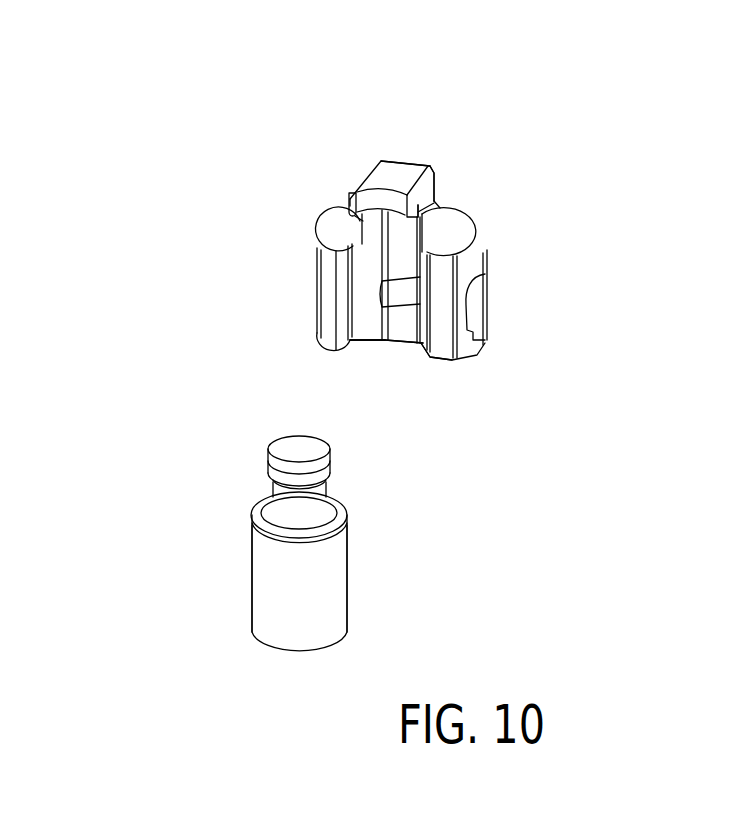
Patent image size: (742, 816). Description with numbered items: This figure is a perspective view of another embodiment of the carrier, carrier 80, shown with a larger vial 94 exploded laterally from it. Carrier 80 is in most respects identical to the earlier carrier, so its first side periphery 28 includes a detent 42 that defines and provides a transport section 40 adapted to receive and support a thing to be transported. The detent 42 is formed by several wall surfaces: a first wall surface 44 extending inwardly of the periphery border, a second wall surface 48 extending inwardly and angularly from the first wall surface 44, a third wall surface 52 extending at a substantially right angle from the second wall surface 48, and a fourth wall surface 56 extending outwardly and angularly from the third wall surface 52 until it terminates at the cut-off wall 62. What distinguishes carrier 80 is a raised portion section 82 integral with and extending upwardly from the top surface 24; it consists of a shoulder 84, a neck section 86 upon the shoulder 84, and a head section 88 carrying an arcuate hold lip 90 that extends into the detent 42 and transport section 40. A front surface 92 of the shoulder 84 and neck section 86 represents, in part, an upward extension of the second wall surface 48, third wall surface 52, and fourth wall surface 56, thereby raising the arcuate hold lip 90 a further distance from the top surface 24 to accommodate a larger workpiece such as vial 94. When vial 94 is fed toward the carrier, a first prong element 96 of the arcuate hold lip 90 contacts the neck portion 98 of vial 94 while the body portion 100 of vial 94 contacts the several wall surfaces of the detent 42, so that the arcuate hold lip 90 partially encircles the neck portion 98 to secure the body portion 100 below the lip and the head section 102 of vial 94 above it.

The carrier 80 is at (547, 229).
The head section 88 is at (397, 175).
The arcuate hold lip 90 is at (377, 200).
The first prong element 96 is at (349, 198).
The front surface 92 is at (358, 218).
The top surface 24 is at (333, 230).
The second wall surface 48 is at (373, 222).
The third wall surface 52 is at (400, 249).
The first wall surface 44 is at (340, 328).
The detent 42 is at (372, 341).
The transport section 40 is at (365, 379).
The first side periphery 28 is at (408, 370).
The fourth wall surface 56 is at (423, 337).
The cut-off wall 62 is at (443, 343).
The raised portion section 82 is at (434, 170).
The shoulder 84 is at (434, 222).
The neck section 86 is at (429, 195).
The vial 94 is at (363, 561).
The head section 102 is at (270, 470).
The neck portion 98 is at (330, 497).
The body portion 100 is at (272, 583).